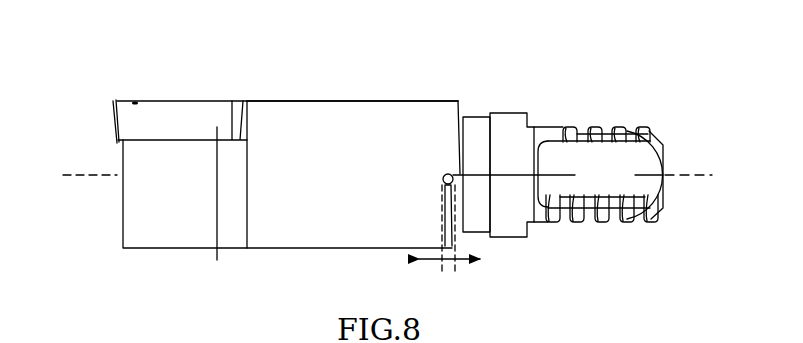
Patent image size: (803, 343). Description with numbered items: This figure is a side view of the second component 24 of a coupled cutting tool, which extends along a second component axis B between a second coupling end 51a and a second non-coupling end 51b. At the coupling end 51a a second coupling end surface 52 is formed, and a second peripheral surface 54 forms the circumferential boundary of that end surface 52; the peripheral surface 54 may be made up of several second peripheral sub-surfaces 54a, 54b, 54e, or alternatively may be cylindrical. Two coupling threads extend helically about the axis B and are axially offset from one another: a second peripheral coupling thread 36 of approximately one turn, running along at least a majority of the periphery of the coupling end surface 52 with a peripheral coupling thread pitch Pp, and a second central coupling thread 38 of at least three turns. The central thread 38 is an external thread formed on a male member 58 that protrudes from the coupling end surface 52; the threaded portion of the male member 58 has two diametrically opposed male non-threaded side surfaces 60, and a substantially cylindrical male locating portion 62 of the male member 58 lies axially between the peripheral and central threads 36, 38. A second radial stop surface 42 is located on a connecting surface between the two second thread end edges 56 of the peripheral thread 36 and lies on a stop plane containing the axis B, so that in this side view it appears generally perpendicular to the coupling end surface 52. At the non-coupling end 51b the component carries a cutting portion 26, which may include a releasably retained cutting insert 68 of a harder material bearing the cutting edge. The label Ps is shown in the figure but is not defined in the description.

The second component 24 is at (632, 49).
The cutting portion 26 is at (162, 78).
The second peripheral coupling thread 36 is at (462, 108).
The second central coupling thread 38 is at (633, 127).
The second radial stop surface 42 is at (452, 175).
The second coupling end 51a is at (457, 90).
The second non-coupling end 51b is at (110, 95).
The second coupling end surface 52 is at (452, 224).
The second peripheral surface 54 is at (343, 228).
The second peripheral sub-surface 54a is at (293, 227).
The second peripheral sub-surface 54b is at (287, 100).
The second peripheral sub-surface 54e is at (257, 250).
The second thread end edge 56 is at (455, 177).
The male member 58 is at (673, 130).
The male non-threaded side surface 60 is at (617, 178).
The male locating portion 62 is at (503, 127).
The cutting insert 68 is at (182, 118).
The secondary force Ps is at (611, 116).
The peripheral coupling thread pitch Pp is at (452, 262).
The second component axis B is at (415, 176).